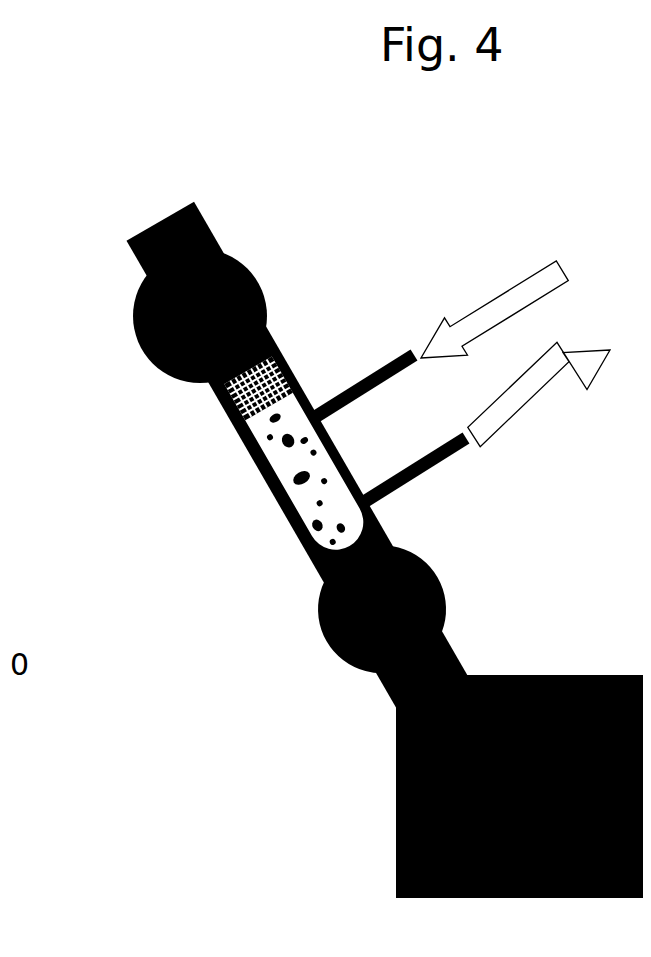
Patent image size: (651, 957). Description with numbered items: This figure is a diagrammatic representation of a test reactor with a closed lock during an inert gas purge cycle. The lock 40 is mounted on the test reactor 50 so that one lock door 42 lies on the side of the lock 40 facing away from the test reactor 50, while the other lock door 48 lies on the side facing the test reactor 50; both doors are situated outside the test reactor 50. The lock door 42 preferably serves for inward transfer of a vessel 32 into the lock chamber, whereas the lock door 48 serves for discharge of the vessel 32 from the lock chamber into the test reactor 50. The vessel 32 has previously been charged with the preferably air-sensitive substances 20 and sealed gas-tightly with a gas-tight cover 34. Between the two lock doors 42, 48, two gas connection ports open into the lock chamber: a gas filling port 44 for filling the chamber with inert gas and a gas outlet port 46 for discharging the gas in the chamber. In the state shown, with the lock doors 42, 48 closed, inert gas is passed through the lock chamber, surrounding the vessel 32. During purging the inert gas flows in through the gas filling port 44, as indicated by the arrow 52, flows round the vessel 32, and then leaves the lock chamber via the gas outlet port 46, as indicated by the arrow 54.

The air-sensitive substances 20 is at (343, 498).
The vessel 32 is at (283, 460).
The gas-tight cover 34 is at (217, 402).
The lock 40 is at (308, 248).
The lock door 42 is at (130, 335).
The gas filling port 44 is at (363, 367).
The gas outlet port 46 is at (410, 470).
The lock door 48 is at (318, 632).
The test reactor 50 is at (550, 665).
The arrow 52 is at (520, 278).
The arrow 54 is at (518, 393).